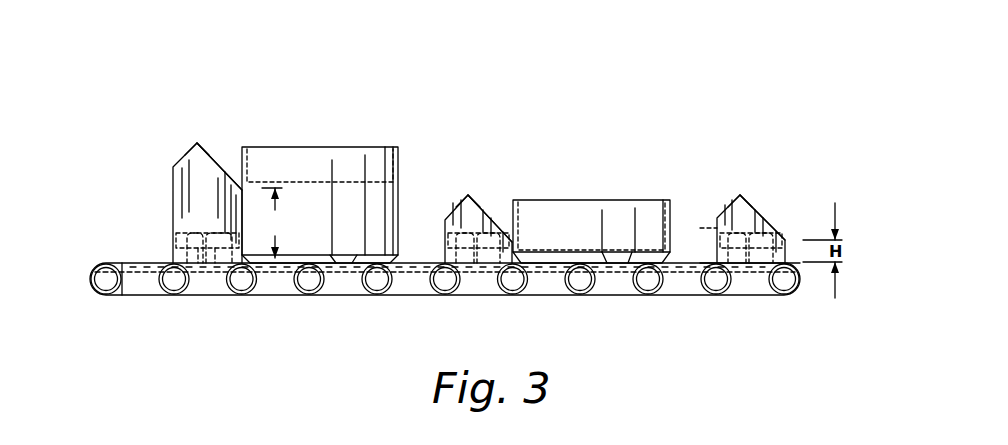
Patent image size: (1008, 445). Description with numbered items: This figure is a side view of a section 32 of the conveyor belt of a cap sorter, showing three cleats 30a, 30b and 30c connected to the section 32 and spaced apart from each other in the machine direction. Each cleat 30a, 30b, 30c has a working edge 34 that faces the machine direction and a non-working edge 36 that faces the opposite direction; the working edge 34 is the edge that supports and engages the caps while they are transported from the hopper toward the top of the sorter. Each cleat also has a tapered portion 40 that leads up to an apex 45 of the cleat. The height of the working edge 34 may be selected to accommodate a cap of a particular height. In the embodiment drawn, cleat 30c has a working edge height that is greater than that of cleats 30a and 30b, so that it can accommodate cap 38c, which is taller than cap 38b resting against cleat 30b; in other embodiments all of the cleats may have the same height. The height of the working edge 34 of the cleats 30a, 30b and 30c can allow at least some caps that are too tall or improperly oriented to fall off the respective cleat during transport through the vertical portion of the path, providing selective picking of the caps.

The cleat 30a is at (754, 186).
The cleat 30b is at (480, 184).
The cleat 30c is at (209, 126).
The section 32 is at (283, 290).
The working edge 34 is at (800, 250).
The non-working edge 36 is at (703, 228).
The cap 38b is at (617, 203).
The cap 38c is at (340, 153).
The tapered portion 40 is at (223, 170).
The apex 45 is at (197, 143).